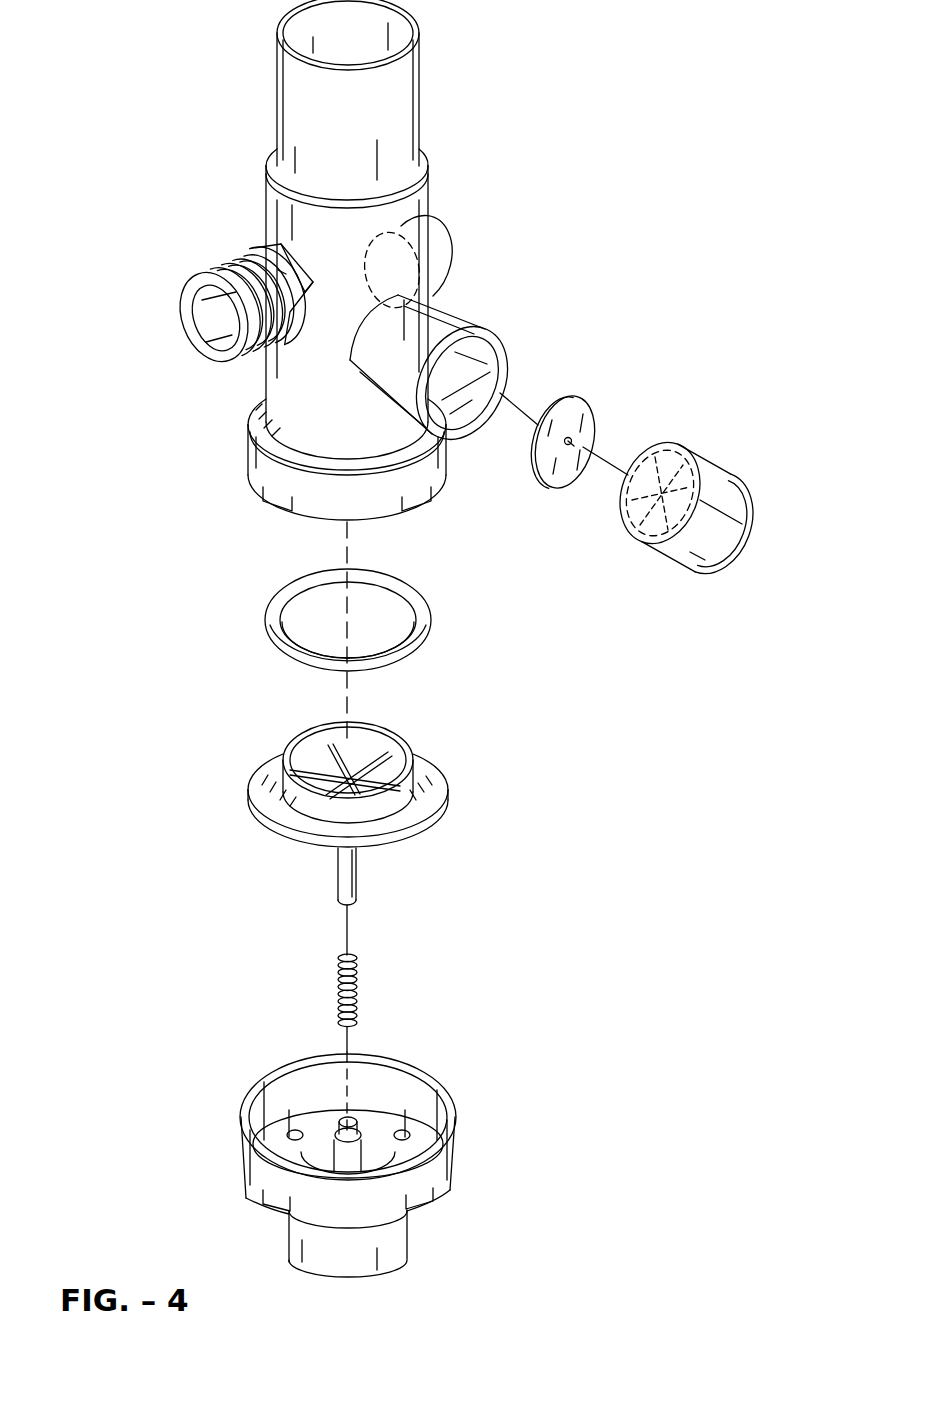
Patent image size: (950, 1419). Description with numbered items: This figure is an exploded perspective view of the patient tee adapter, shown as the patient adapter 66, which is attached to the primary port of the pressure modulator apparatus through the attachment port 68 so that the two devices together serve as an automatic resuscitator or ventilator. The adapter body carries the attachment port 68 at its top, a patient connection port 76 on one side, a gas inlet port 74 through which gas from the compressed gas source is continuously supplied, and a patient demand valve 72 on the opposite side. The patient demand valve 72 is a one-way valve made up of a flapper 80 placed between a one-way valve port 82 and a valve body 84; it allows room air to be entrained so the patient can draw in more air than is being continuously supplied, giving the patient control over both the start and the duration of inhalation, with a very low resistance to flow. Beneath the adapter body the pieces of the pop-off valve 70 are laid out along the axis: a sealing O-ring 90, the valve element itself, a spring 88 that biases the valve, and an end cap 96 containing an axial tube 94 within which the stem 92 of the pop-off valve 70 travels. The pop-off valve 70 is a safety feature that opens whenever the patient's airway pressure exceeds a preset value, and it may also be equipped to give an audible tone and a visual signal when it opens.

The patient adapter 66 is at (548, 226).
The attachment port 68 is at (418, 46).
The pop-off valve 70 is at (446, 780).
The patient demand valve 72 is at (449, 371).
The gas inlet port 74 is at (440, 236).
The patient connection port 76 is at (215, 268).
The flapper 80 is at (598, 406).
The one-way valve port 82 is at (455, 406).
The valve body 84 is at (706, 458).
The spring 88 is at (358, 985).
The sealing O-ring 90 is at (412, 590).
The stem 92 is at (358, 876).
The axial tube 94 is at (356, 1155).
The end cap 96 is at (382, 1165).